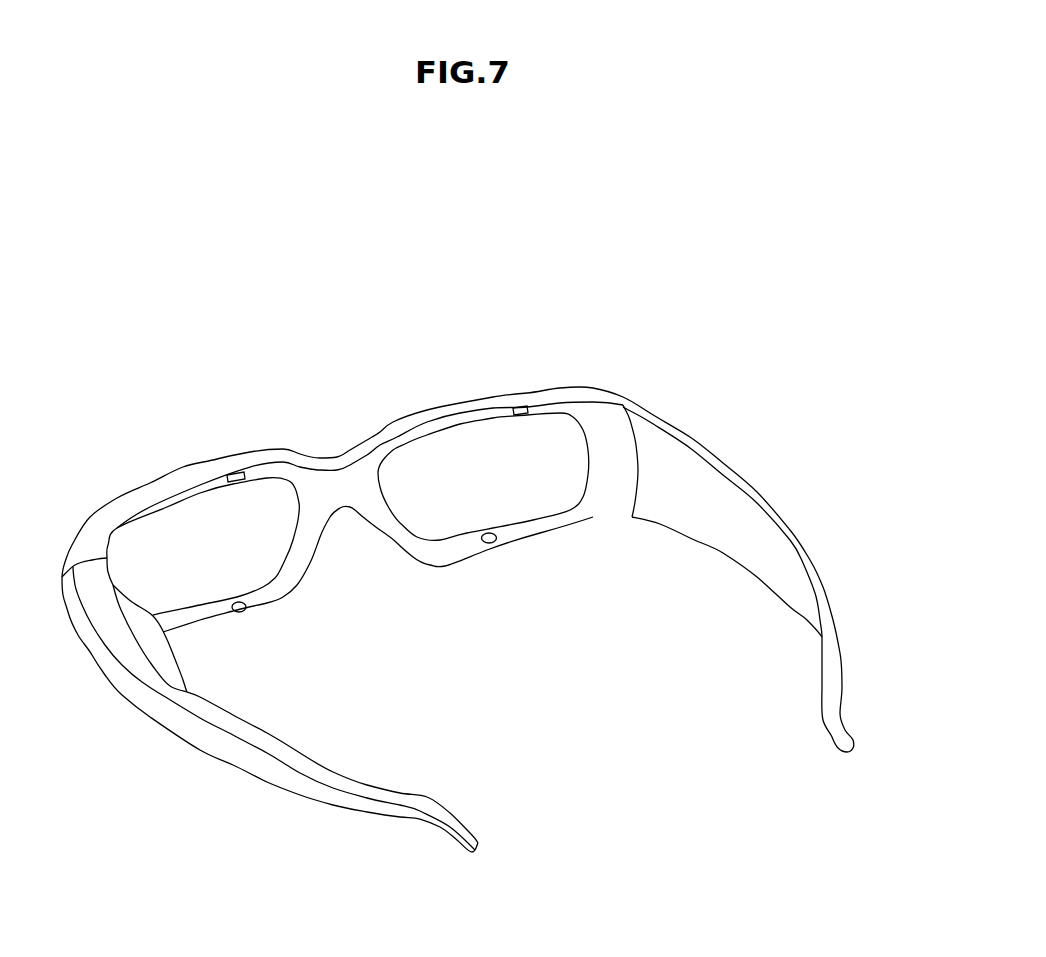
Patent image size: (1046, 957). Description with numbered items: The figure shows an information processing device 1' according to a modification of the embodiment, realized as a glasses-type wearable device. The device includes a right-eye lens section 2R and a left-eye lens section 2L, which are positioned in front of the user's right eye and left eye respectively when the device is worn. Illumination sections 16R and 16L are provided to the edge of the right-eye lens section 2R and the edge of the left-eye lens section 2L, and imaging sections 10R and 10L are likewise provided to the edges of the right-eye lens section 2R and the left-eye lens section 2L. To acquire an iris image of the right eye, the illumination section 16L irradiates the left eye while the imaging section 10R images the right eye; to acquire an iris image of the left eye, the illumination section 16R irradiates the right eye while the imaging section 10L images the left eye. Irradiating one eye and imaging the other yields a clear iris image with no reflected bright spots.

The information processing device 1' is at (499, 540).
The left-eye lens section 2L is at (193, 520).
The right-eye lens section 2R is at (457, 461).
The illumination section 16L is at (241, 472).
The illumination section 16R is at (523, 405).
The imaging section 10L is at (243, 612).
The imaging section 10R is at (493, 543).